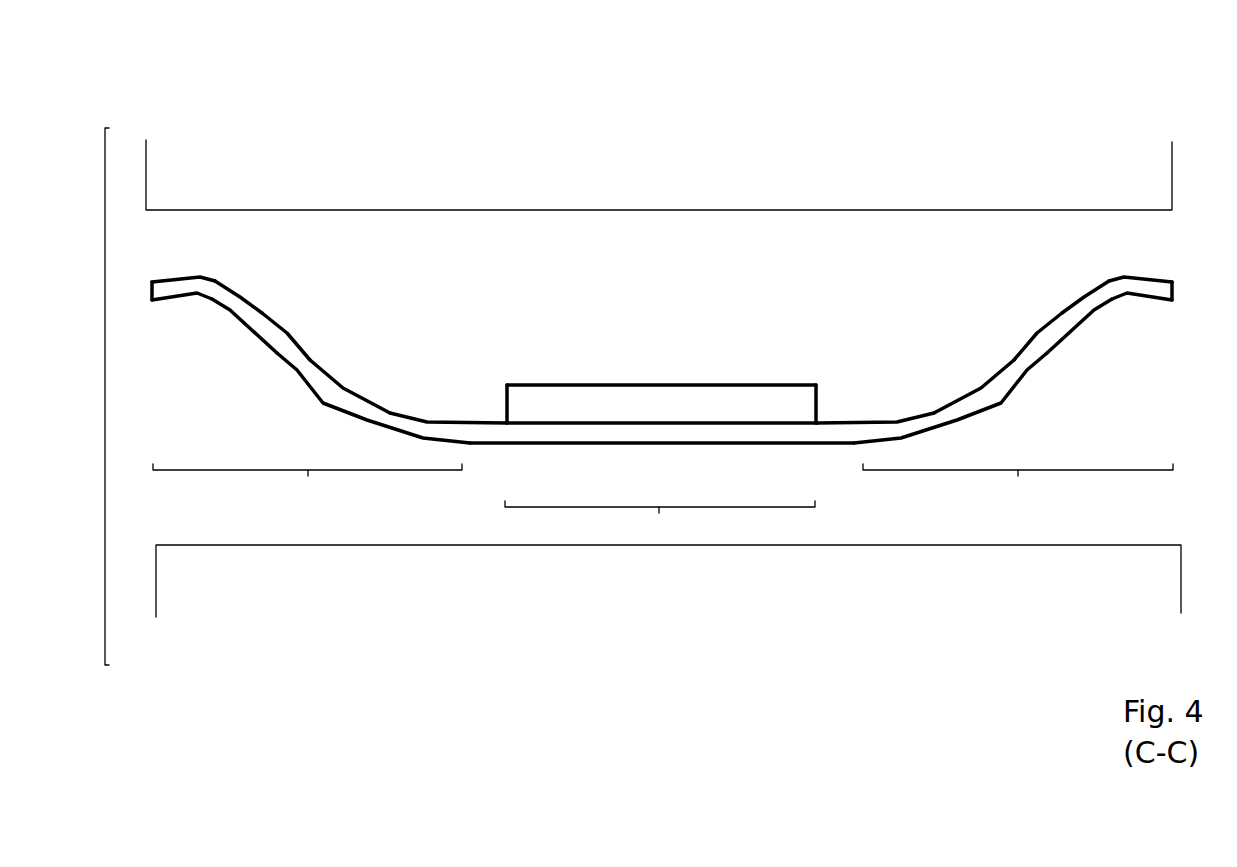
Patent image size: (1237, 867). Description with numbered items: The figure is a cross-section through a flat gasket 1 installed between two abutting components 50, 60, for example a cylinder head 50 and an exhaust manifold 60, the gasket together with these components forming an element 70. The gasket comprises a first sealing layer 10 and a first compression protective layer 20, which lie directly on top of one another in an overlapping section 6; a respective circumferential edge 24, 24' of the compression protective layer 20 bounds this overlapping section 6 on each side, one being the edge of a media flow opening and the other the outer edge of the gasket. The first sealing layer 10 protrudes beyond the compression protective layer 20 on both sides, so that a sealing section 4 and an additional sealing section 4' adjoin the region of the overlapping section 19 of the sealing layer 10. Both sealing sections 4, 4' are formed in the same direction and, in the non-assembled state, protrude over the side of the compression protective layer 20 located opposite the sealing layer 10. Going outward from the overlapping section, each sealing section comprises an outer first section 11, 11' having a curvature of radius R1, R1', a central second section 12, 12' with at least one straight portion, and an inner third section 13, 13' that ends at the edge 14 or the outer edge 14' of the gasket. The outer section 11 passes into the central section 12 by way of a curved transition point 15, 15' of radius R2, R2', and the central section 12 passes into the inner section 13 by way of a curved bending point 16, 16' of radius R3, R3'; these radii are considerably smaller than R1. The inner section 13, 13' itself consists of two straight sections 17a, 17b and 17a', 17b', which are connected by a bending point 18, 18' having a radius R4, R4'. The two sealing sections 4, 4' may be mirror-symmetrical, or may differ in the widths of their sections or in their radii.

The flat gasket 1 is at (648, 328).
The sealing section 4 is at (307, 486).
The additional sealing section 4' is at (1018, 486).
The overlapping section 6 is at (660, 521).
The first sealing layer 10 is at (642, 432).
The outer first section 11 is at (445, 397).
The outer section of additional sealing section 11' is at (879, 397).
The central second section 12 is at (349, 366).
The central section of additional sealing section 12' is at (974, 367).
The inner third section 13 is at (243, 282).
The inner section of additional sealing section 13' is at (1080, 282).
The edge 14 is at (131, 266).
The outer edge 14' is at (1193, 266).
The curved transition point 15 is at (373, 402).
The curved transition point of additional sealing section 15' is at (950, 402).
The curved bending point 16 is at (289, 321).
The curved bending point of additional sealing section 16' is at (1035, 322).
The straight section 17a is at (237, 330).
The straight section of additional sealing section 17a' is at (1089, 330).
The straight section 17b is at (175, 318).
The straight section of additional sealing section 17b' is at (1152, 318).
The bending point 18 is at (190, 259).
The bending point of additional sealing section 18' is at (1135, 258).
The overlapping section region 19 is at (732, 430).
The first compression protective layer 20 is at (612, 403).
The circumferential edge 24 is at (481, 387).
The circumferential edge 24' is at (840, 391).
The abutting component 50 is at (667, 181).
The abutting component 60 is at (667, 611).
The element 70 is at (105, 395).
The radius R1 is at (433, 377).
The radius R2 is at (370, 348).
The radius R3 is at (242, 371).
The radius R4 is at (176, 359).
The radius R1' is at (889, 379).
The radius R2' is at (950, 350).
The radius R3' is at (1081, 374).
The radius R4' is at (1147, 360).